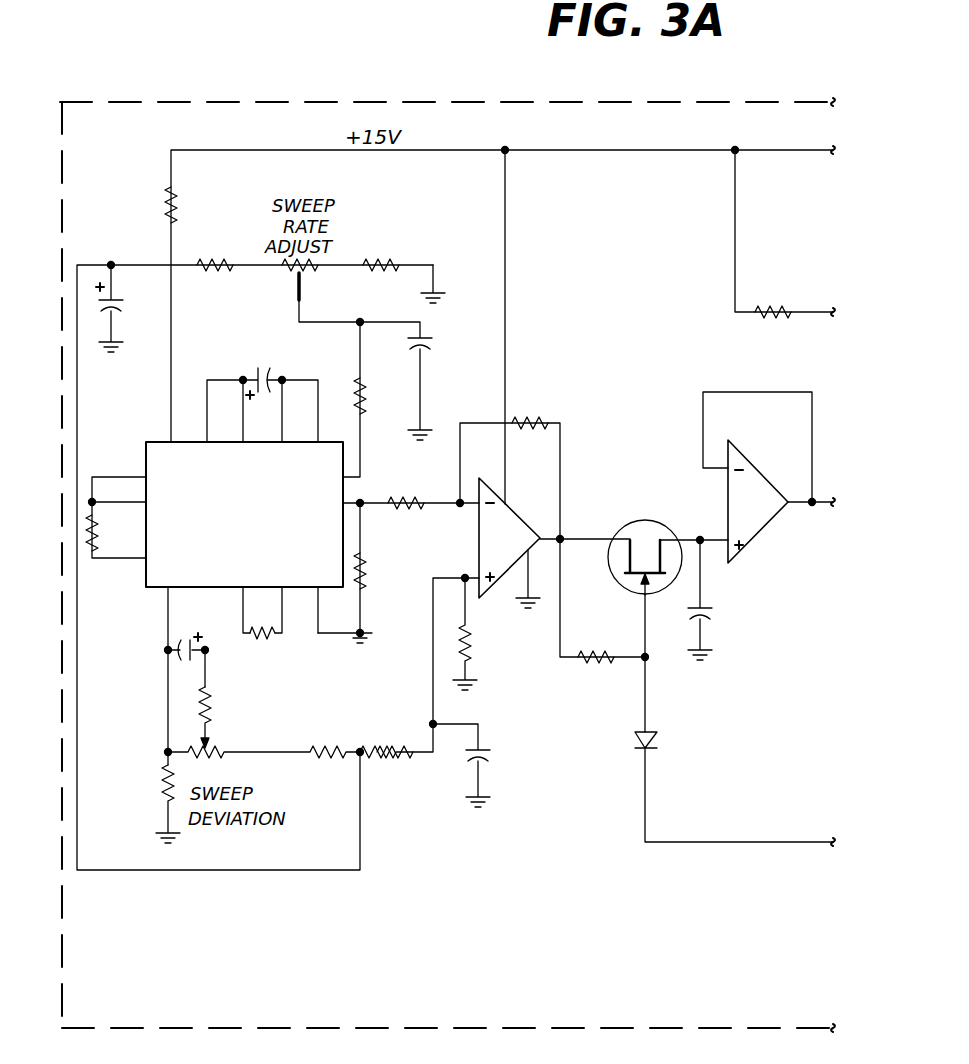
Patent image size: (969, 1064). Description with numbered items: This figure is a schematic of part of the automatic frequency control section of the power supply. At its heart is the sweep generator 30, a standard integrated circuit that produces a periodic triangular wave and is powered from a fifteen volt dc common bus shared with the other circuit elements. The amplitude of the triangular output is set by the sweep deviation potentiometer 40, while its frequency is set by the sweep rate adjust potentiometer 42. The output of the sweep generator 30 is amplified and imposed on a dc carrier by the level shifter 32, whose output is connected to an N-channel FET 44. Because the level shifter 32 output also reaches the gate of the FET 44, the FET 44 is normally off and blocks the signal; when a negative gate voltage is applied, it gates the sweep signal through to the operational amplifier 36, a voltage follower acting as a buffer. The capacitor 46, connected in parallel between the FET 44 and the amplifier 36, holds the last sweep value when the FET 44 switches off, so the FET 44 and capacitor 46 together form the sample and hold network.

The sweep generator 30 is at (260, 528).
The level shifter 32 is at (485, 537).
The operational amplifier 36 is at (752, 479).
The sweep deviation potentiometer 40 is at (211, 743).
The sweep rate adjust potentiometer 42 is at (298, 274).
The N-channel FET 44 is at (622, 555).
The capacitor 46 is at (707, 611).